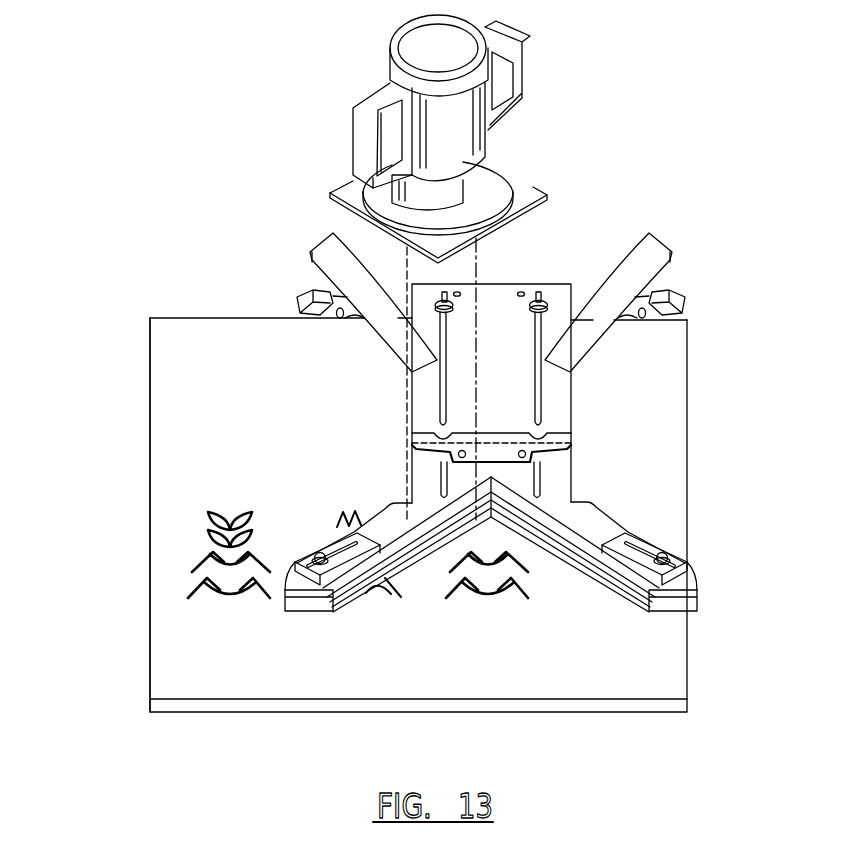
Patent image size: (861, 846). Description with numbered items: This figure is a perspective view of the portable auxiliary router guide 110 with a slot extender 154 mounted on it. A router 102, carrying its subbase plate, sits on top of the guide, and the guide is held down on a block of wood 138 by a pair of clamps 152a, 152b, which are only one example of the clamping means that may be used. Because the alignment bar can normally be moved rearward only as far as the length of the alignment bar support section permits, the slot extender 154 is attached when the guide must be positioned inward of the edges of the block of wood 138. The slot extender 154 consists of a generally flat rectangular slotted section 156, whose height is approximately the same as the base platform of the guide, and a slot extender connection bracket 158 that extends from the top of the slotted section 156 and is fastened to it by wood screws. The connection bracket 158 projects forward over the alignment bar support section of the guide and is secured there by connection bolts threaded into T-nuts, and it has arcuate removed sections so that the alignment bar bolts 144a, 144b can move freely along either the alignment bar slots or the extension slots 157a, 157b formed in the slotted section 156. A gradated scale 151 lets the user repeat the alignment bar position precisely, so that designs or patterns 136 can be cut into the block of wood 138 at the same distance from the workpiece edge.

The router 102 is at (467, 105).
The portable auxiliary router guide 110 is at (617, 496).
The designs or patterns 136 is at (205, 595).
The block of wood 138 is at (220, 690).
The alignment bar bolt 144a is at (441, 294).
The alignment bar bolt 144b is at (541, 294).
The gradated scale 151 is at (117, 515).
The clamp 152a is at (333, 295).
The clamp 152b is at (637, 297).
The slot extender 154 is at (497, 299).
The slotted section 156 is at (512, 388).
The extension slot 157a is at (438, 392).
The extension slot 157b is at (543, 417).
The slot extender connection bracket 158 is at (422, 443).